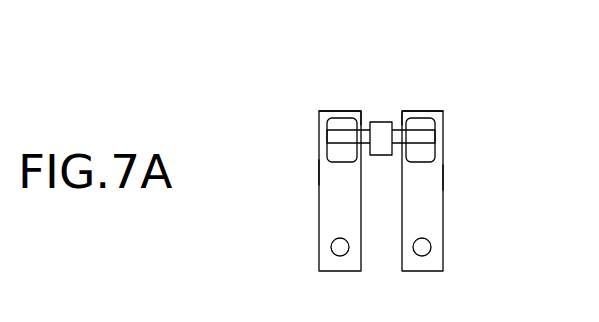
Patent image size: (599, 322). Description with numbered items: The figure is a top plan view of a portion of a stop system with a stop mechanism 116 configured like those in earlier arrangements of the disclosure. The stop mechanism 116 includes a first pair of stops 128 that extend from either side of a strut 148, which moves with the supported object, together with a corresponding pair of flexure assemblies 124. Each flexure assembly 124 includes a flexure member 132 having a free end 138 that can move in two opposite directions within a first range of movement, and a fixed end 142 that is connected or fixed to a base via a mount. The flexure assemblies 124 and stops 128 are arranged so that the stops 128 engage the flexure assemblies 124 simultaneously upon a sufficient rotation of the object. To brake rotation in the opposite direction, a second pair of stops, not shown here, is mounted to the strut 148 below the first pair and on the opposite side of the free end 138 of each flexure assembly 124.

The stop mechanism 116 is at (389, 137).
The flexure assembly 124 is at (386, 191).
The stop 128 is at (429, 99).
The flexure member 132 is at (383, 164).
The free end 138 is at (381, 95).
The fixed end 142 is at (380, 253).
The strut 148 is at (381, 81).